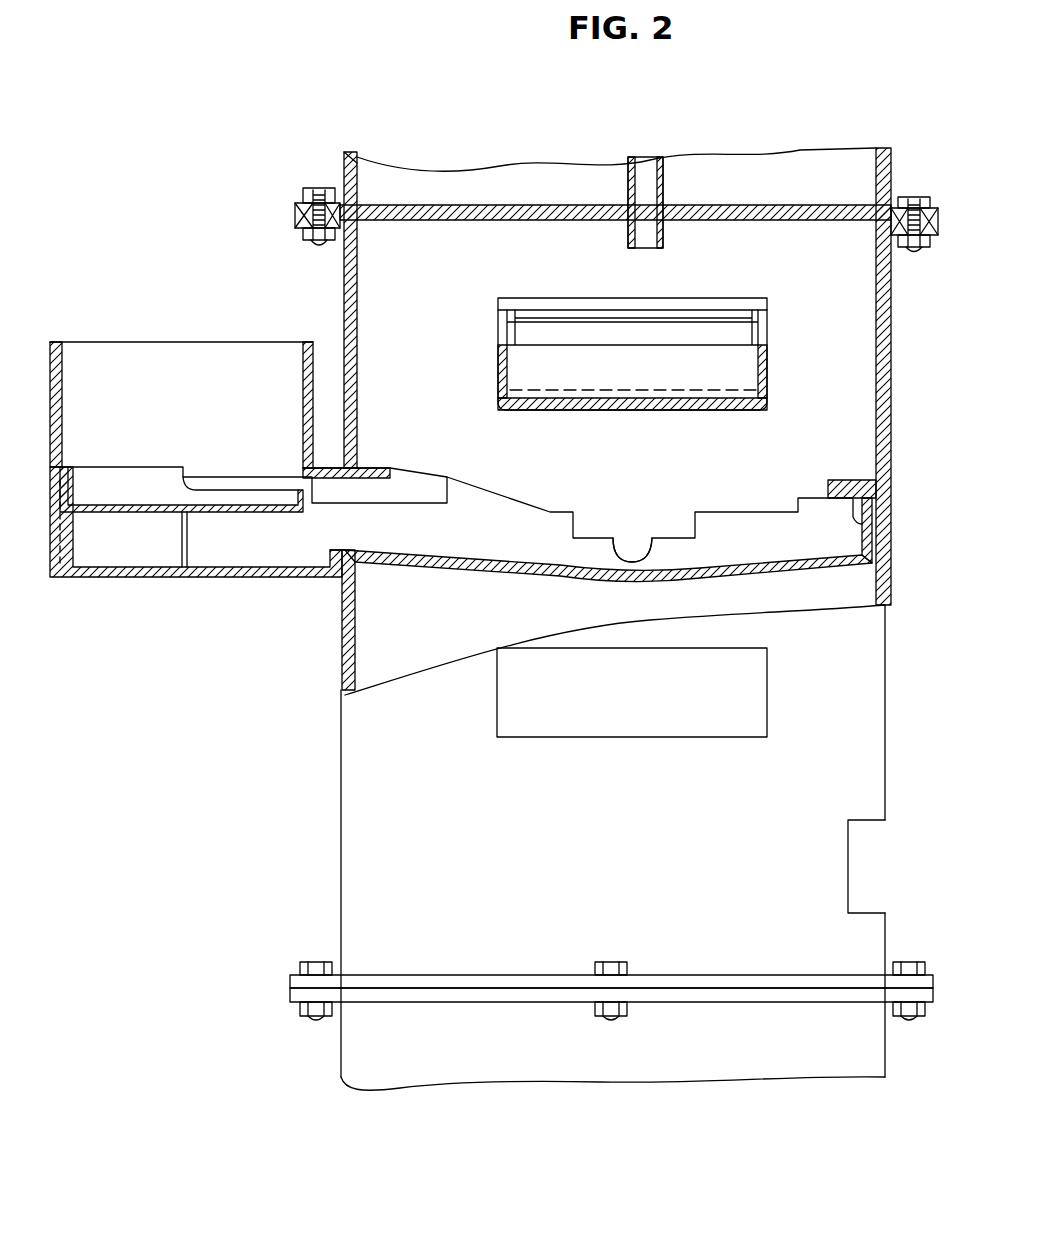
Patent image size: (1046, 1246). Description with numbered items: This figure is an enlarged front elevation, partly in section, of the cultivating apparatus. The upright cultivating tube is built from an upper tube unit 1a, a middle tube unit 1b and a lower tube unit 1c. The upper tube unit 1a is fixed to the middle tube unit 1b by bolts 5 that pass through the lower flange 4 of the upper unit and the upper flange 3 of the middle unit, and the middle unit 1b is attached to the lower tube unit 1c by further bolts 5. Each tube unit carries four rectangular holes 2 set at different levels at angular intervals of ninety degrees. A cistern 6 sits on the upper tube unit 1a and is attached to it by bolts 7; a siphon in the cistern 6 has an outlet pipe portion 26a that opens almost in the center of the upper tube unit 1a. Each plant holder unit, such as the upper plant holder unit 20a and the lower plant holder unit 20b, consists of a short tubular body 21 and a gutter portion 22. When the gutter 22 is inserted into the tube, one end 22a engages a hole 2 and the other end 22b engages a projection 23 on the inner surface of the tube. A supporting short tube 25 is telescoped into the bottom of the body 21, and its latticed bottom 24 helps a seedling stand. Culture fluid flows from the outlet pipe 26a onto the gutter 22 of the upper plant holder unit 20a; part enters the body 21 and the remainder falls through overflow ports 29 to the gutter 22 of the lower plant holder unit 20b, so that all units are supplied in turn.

The upper tube unit 1a is at (344, 298).
The middle tube unit 1b is at (342, 690).
The lower tube unit 1c is at (342, 1045).
The rectangular hole 2 is at (730, 302).
The upper flange 3 is at (852, 1000).
The lower flange 4 is at (848, 983).
The bolt 5 is at (310, 962).
The cistern 6 is at (868, 174).
The bolt 7 is at (318, 190).
The upper plant holder unit 20a is at (750, 358).
The lower plant holder unit 20b is at (50, 338).
The tubular body 21 is at (168, 355).
The gutter portion 22 is at (448, 563).
The gutter end 22a is at (350, 558).
The gutter end 22b is at (875, 517).
The projection 23 is at (836, 490).
The latticed bottom 24 is at (213, 513).
The supporting short tube 25 is at (103, 487).
The outlet pipe portion 26a is at (650, 243).
The overflow port 29 is at (500, 357).